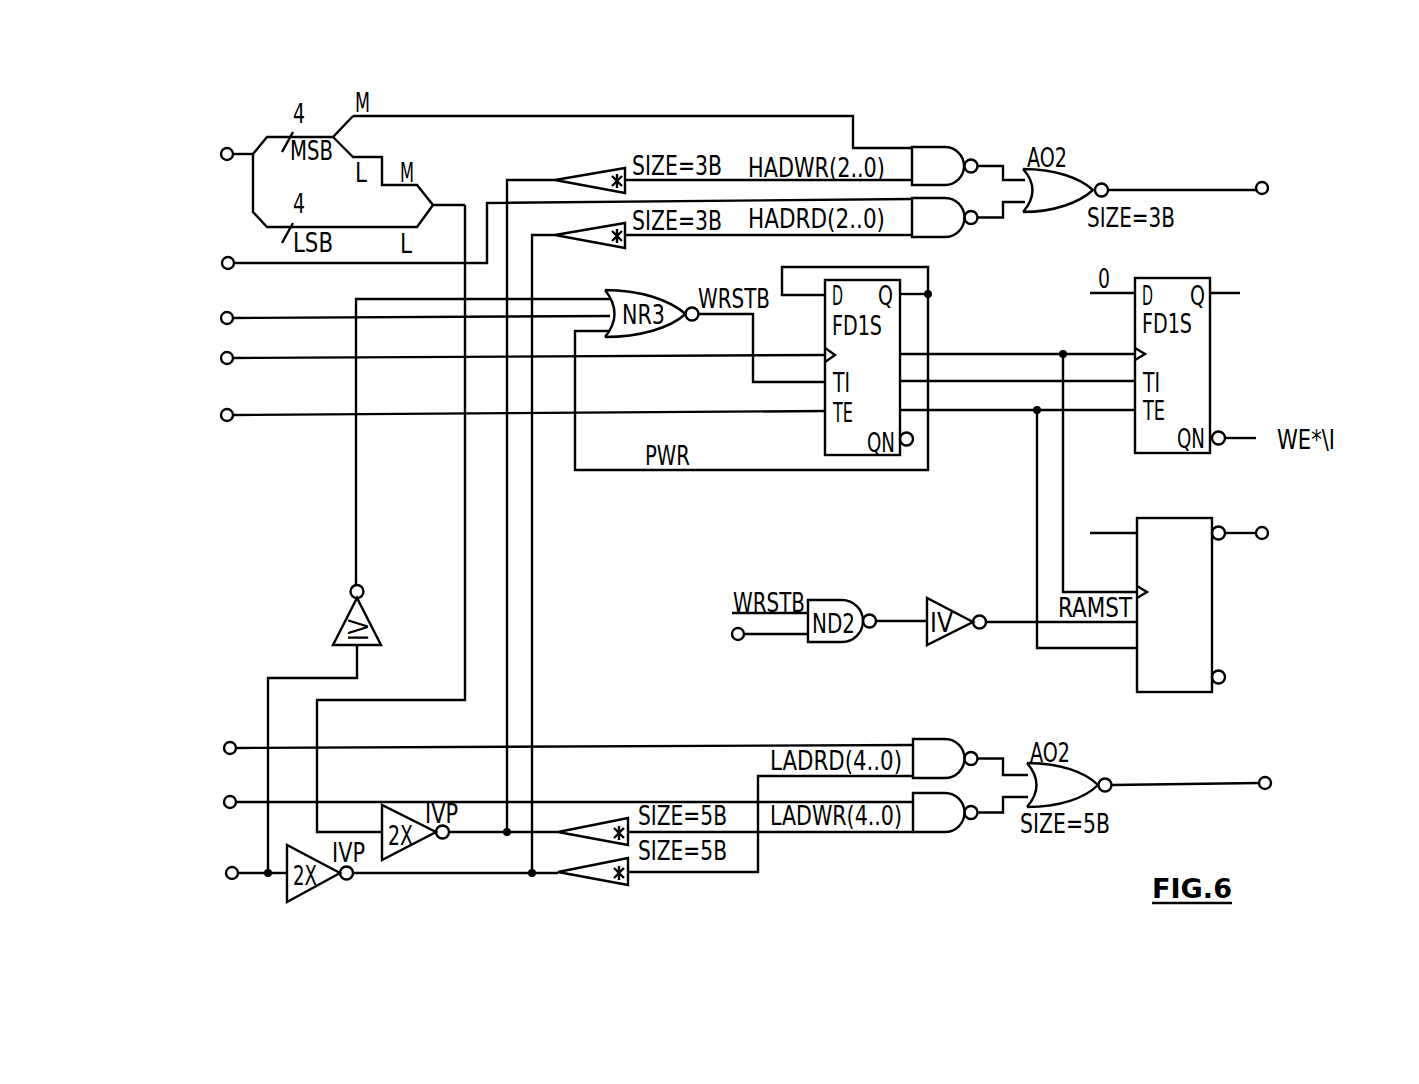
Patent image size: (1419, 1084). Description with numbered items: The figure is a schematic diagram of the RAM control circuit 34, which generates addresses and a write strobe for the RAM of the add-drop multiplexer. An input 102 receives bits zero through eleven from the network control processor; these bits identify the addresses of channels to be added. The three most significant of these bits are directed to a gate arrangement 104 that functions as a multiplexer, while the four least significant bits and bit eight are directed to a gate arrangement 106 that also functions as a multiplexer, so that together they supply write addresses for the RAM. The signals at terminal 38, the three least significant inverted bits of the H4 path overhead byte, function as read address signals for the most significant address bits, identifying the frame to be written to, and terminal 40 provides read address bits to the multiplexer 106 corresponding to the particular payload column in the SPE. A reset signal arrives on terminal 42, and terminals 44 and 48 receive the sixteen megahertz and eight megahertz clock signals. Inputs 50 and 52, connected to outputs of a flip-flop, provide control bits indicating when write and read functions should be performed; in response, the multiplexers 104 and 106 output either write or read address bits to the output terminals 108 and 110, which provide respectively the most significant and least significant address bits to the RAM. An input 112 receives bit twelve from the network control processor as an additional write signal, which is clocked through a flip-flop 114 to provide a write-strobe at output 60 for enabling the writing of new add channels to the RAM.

The input 102 is at (223, 160).
The terminal 38 is at (228, 256).
The terminal 42 is at (232, 313).
The terminal 44 is at (232, 353).
The terminal 48 is at (232, 410).
The RAM control circuit 34 is at (860, 104).
The gate arrangement 104 is at (1088, 156).
The output terminal 108 is at (1262, 182).
The terminal 40 is at (227, 753).
The input 50 is at (230, 808).
The input 52 is at (232, 880).
The input 112 is at (742, 640).
The flip-flop 114 is at (1213, 588).
The output 60 is at (1263, 527).
The gate arrangement 106 is at (1091, 751).
The output terminal 110 is at (1265, 777).